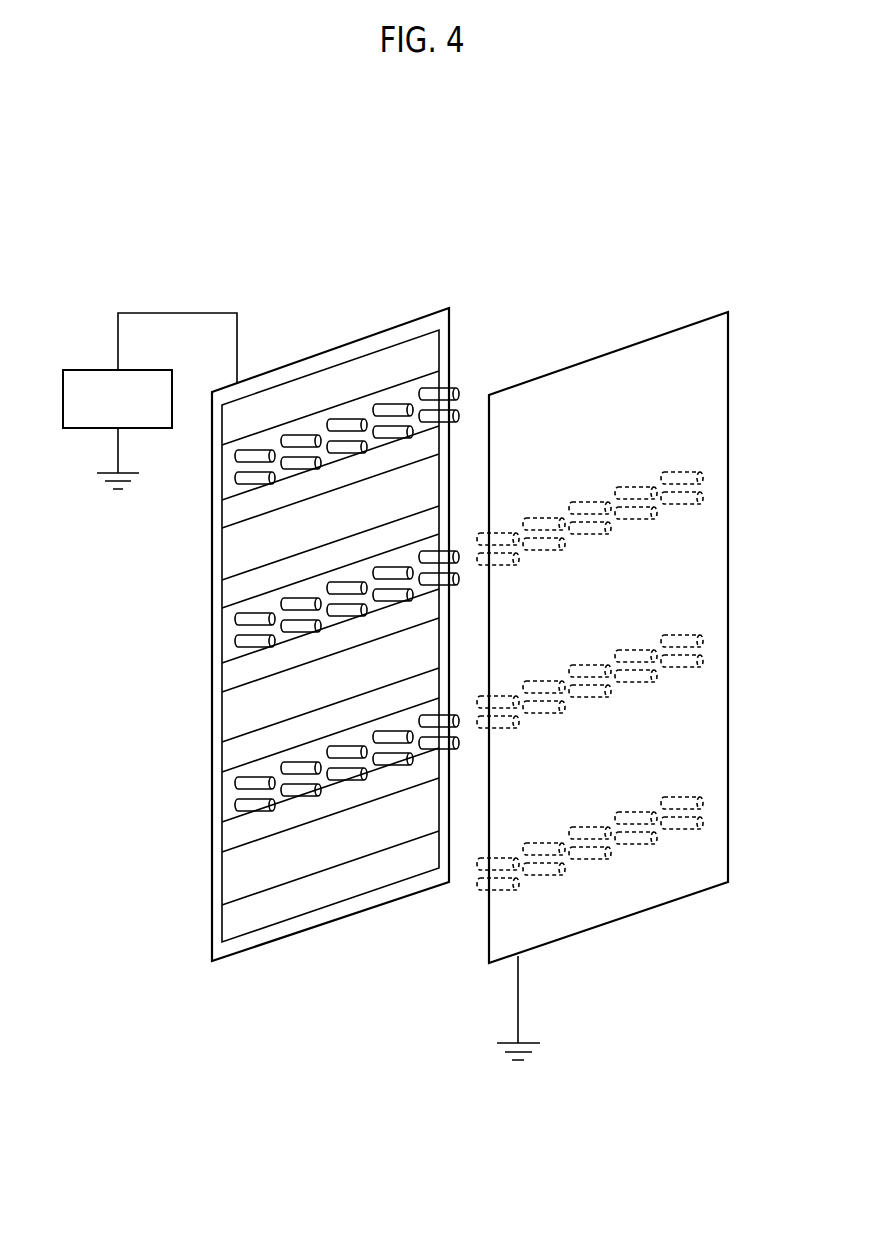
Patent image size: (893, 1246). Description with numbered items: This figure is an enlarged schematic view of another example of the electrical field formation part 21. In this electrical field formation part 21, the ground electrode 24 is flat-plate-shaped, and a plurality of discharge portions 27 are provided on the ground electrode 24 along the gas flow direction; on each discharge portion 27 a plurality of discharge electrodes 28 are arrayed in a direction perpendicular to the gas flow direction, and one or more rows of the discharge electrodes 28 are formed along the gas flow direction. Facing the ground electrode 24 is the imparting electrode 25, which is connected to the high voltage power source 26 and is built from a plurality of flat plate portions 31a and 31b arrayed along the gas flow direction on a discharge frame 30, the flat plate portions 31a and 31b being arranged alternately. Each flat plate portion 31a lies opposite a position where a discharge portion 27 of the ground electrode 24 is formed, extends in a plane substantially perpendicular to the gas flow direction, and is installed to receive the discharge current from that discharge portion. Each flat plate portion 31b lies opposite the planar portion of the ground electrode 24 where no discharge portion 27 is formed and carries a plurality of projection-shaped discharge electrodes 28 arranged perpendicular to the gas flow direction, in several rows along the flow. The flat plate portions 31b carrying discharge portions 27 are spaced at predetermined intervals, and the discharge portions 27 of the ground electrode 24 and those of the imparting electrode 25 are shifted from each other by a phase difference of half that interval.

The electrical field formation part 21 is at (648, 645).
The ground electrode 24 is at (728, 342).
The imparting electrode 25 is at (294, 600).
The high voltage power source 26 is at (81, 370).
The discharge portion 27 is at (470, 639).
The discharge electrode 28 is at (255, 453).
The discharge frame 30 is at (311, 367).
The flat plate portion 31a is at (230, 550).
The flat plate portion 31b is at (228, 485).